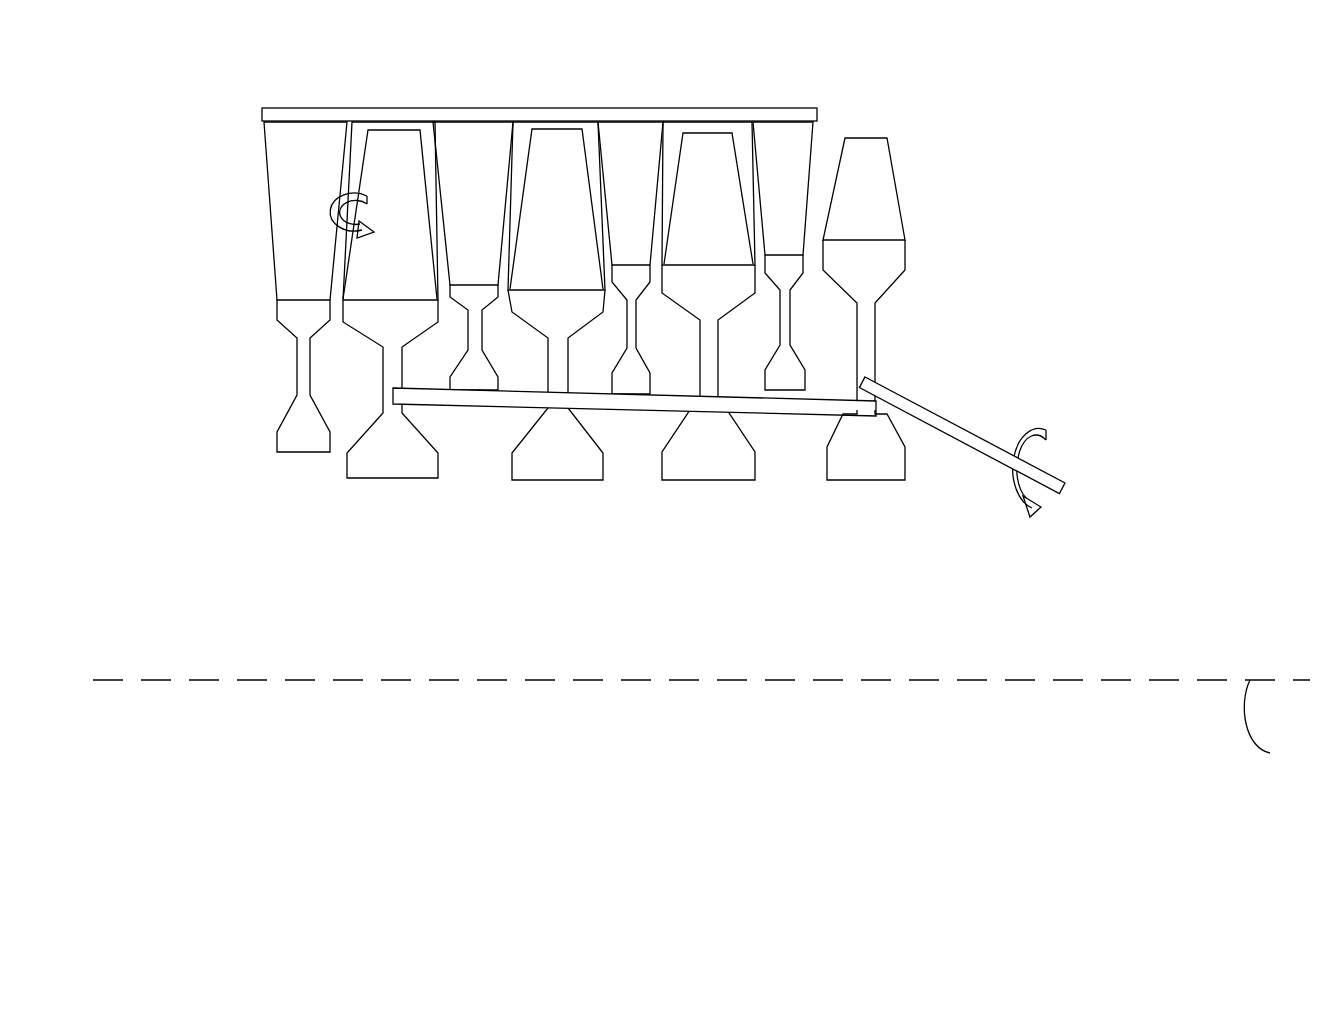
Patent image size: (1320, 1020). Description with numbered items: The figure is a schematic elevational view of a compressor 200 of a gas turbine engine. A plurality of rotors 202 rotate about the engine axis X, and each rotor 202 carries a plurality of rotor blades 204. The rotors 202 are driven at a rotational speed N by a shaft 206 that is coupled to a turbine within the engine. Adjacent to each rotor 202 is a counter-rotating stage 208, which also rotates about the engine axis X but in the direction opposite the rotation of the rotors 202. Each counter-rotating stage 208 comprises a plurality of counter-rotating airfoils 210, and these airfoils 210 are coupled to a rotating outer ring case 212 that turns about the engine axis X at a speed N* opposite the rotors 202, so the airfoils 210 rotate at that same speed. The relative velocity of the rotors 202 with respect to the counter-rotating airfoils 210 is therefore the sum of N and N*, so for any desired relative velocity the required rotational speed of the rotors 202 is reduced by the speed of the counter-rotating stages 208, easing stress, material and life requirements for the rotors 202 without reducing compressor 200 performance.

The compressor 200 is at (1082, 69).
The rotor 202 is at (828, 473).
The rotor blade 204 is at (389, 160).
The shaft 206 is at (965, 427).
The counter-rotating stage 208 is at (297, 345).
The counter-rotating airfoil 210 is at (283, 148).
The rotating outer ring case 212 is at (695, 107).